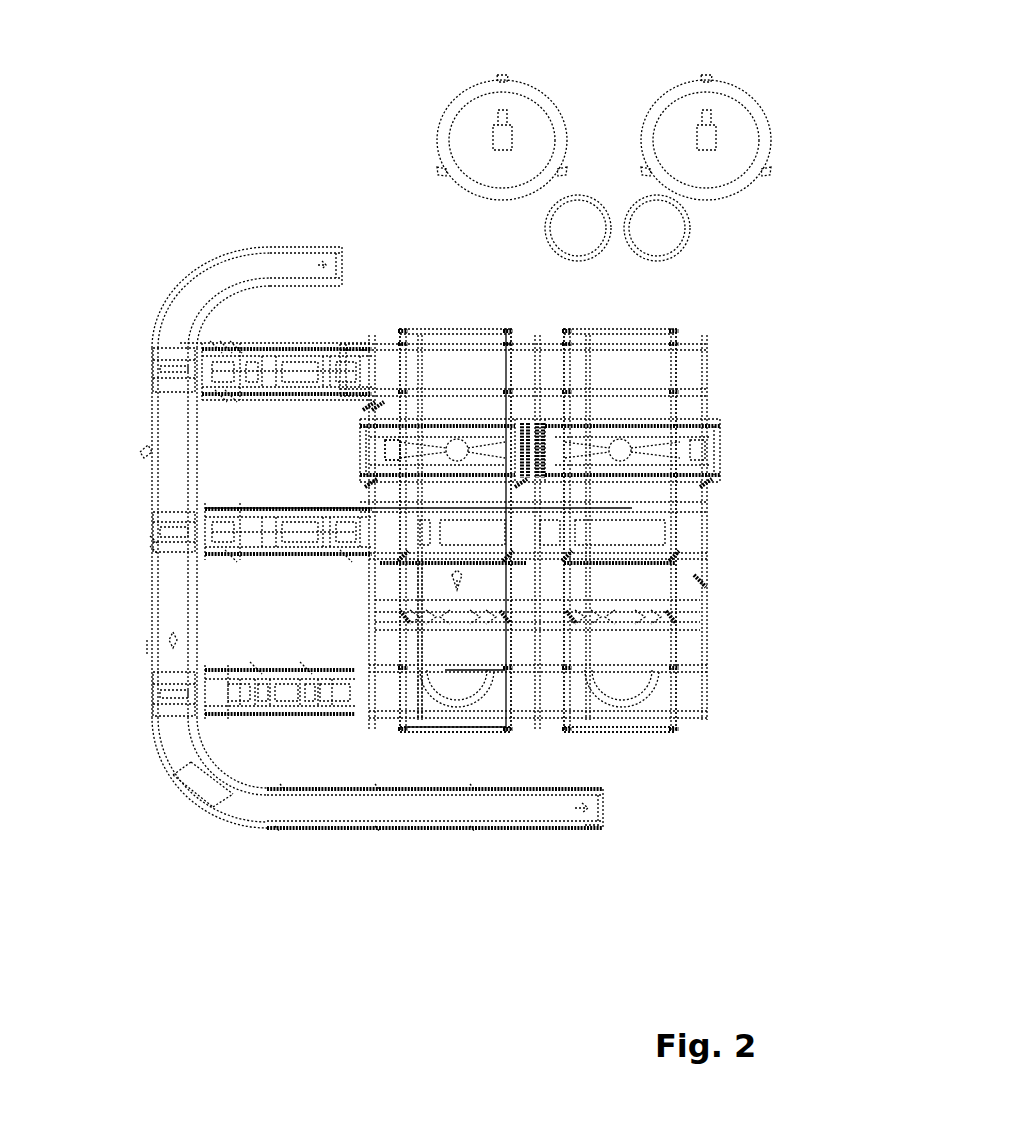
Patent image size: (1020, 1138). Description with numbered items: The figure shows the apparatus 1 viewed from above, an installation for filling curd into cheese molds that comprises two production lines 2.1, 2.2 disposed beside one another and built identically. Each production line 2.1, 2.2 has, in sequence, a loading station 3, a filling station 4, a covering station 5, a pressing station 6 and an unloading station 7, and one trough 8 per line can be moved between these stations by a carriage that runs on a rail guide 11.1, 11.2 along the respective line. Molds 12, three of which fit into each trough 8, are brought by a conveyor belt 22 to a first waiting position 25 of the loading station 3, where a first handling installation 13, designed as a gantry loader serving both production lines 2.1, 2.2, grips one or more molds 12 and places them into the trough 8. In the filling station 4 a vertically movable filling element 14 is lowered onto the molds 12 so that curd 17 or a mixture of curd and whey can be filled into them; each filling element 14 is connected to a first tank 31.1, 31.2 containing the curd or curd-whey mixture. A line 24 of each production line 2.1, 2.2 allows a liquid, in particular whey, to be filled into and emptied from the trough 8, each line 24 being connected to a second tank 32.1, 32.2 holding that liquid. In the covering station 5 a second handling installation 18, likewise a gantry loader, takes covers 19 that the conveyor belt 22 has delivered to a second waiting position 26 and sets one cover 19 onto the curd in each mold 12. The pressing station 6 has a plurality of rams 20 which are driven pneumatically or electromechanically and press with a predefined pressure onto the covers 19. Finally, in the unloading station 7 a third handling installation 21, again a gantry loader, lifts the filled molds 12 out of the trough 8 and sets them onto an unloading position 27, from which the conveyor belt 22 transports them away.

The apparatus 1 is at (208, 155).
The production line 2.1 is at (458, 760).
The production line 2.2 is at (623, 760).
The loading station 3 is at (712, 368).
The filling station 4 is at (712, 451).
The covering station 5 is at (712, 531).
The pressing station 6 is at (712, 612).
The unloading station 7 is at (712, 691).
The trough 8 is at (423, 562).
The rail guide 11.1 is at (478, 733).
The rail guide 11.2 is at (652, 733).
The mold 12 is at (150, 384).
The first handling installation 13 is at (218, 374).
The filling element 14 is at (400, 450).
The curd 17 is at (374, 509).
The second handling installation 18 is at (228, 527).
The cover 19 is at (155, 540).
The ram 20 is at (700, 582).
The third handling installation 21 is at (205, 690).
The conveyor belt 22 is at (290, 812).
The line 24 is at (440, 733).
The first waiting position 25 is at (152, 362).
The second waiting position 26 is at (190, 530).
The unloading position 27 is at (195, 695).
The first tank 31.1 is at (480, 82).
The first tank 31.2 is at (680, 82).
The second tank 32.1 is at (582, 198).
The second tank 32.2 is at (690, 225).